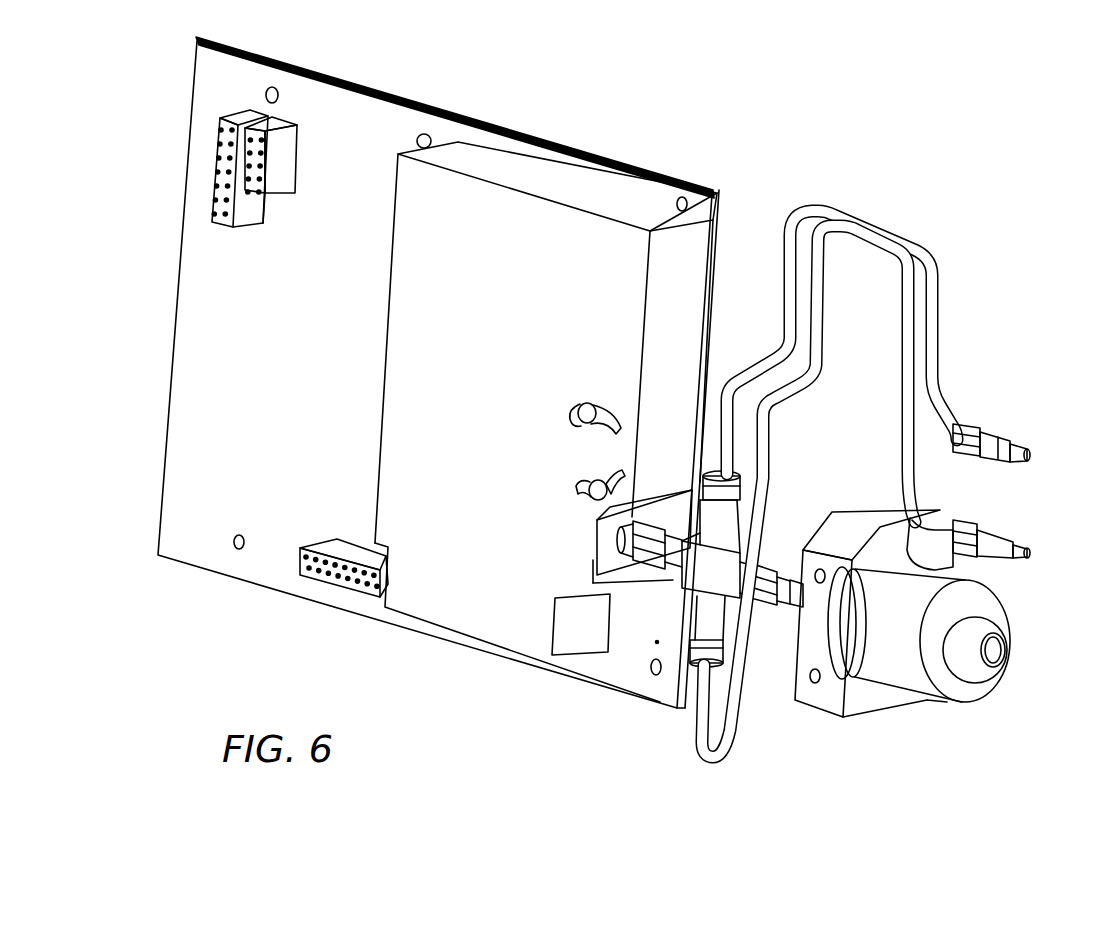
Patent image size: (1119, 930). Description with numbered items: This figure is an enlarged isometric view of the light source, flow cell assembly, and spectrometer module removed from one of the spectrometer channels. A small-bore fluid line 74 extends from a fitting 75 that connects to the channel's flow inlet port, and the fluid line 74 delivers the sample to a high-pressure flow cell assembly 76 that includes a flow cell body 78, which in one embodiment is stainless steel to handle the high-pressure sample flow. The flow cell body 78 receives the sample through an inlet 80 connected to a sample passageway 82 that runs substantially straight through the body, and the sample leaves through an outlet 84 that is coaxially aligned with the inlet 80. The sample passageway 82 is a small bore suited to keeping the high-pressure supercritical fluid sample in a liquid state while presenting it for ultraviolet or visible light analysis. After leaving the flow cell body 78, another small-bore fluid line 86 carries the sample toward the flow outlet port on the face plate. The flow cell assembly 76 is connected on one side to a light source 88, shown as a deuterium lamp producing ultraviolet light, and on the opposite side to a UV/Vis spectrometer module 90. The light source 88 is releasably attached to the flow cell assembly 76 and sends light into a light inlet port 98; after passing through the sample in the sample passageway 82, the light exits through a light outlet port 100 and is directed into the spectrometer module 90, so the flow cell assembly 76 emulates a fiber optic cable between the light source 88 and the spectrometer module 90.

The small-bore fluid line 74 is at (908, 370).
The fitting 75 is at (1030, 452).
The high-pressure flow cell assembly 76 is at (648, 651).
The flow cell body 78 is at (686, 594).
The inlet 80 is at (652, 744).
The sample passageway 82 is at (660, 590).
The outlet 84 is at (727, 488).
The small-bore fluid line 86 is at (820, 210).
The light source 88 is at (902, 643).
The UV/Vis spectrometer module 90 is at (577, 236).
The light inlet port 98 is at (786, 692).
The light outlet port 100 is at (670, 575).